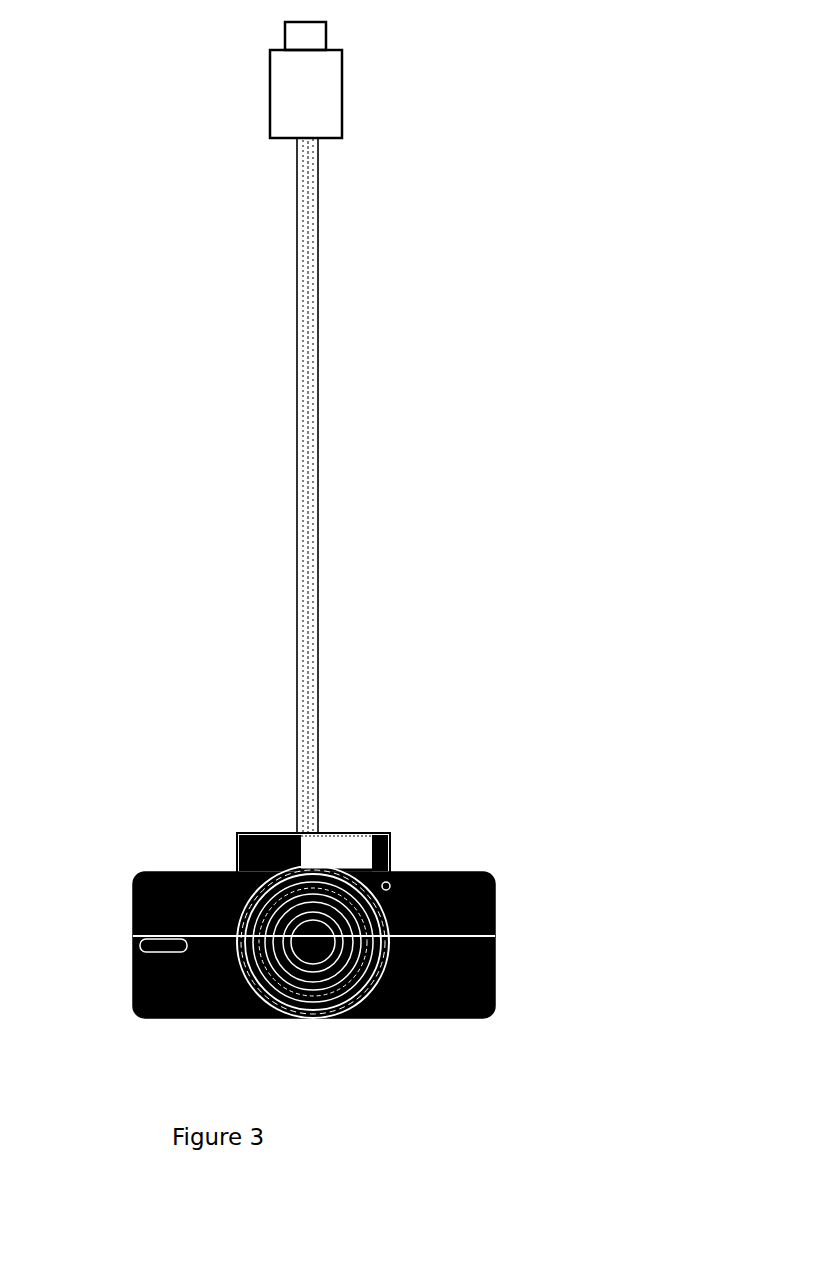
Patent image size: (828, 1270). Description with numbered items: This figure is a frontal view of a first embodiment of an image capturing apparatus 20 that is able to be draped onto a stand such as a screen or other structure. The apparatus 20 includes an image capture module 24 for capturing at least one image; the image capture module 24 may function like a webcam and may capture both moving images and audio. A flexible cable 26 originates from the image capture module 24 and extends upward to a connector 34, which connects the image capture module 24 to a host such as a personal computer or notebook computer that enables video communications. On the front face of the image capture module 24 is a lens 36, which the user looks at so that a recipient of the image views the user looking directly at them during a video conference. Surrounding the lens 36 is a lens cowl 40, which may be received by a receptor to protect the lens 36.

The image capturing apparatus 20 is at (440, 340).
The image capture module 24 is at (495, 930).
The flexible cable 26 is at (307, 250).
The connector 34 is at (315, 76).
The lens 36 is at (245, 888).
The lens cowl 40 is at (390, 882).